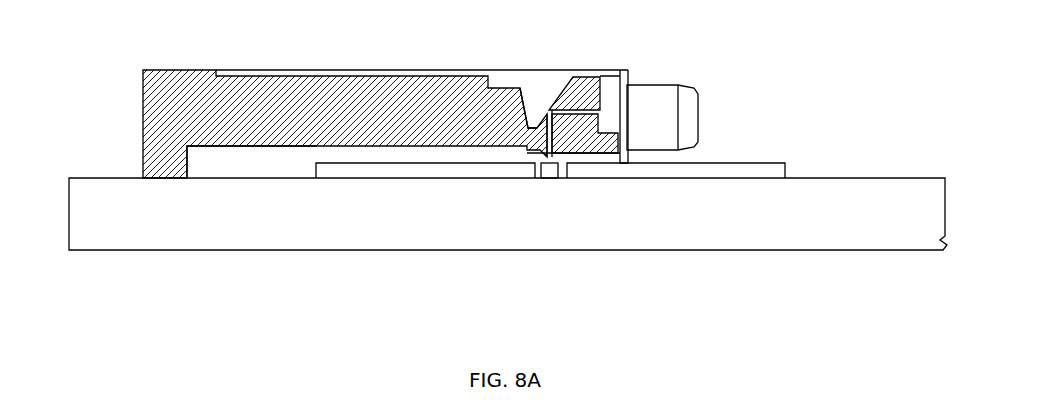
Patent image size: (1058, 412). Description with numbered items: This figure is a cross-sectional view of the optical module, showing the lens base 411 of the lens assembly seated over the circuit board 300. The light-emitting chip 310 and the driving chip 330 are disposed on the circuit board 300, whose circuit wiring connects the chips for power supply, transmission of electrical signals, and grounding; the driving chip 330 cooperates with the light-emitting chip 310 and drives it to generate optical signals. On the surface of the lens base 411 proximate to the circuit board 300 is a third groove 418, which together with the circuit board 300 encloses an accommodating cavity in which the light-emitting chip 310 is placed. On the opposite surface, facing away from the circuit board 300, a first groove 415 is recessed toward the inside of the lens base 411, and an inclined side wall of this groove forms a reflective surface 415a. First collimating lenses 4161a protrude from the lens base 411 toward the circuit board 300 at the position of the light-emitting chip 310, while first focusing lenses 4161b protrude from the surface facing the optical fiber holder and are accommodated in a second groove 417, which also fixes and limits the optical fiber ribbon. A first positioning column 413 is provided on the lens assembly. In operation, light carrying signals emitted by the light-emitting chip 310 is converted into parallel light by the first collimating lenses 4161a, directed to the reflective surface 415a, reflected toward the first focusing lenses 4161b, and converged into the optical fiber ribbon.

The circuit board 300 is at (203, 231).
The light-emitting chip 310 is at (550, 170).
The driving chip 330 is at (387, 170).
The lens base 411 is at (322, 108).
The first positioning column 413 is at (668, 112).
The first groove 415 is at (533, 98).
The reflective surface 415a is at (560, 98).
The second groove 417 is at (615, 97).
The third groove 418 is at (268, 165).
The first collimating lenses 4161a is at (550, 158).
The first focusing lenses 4161b is at (598, 105).